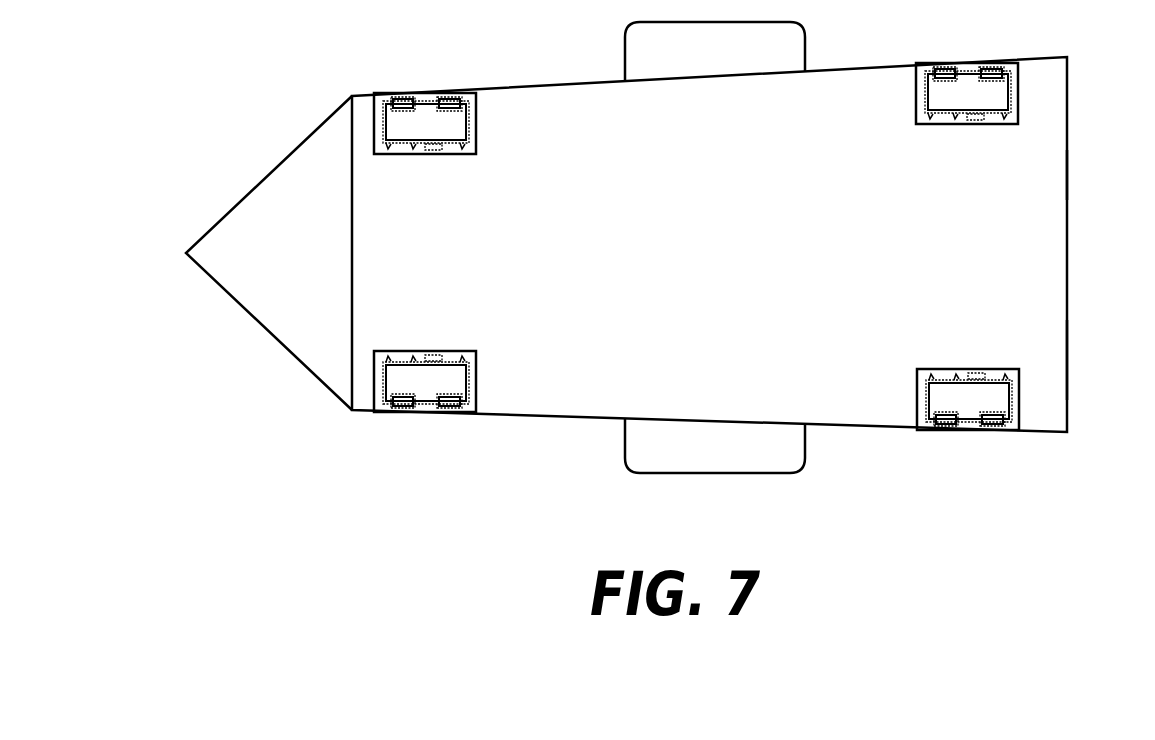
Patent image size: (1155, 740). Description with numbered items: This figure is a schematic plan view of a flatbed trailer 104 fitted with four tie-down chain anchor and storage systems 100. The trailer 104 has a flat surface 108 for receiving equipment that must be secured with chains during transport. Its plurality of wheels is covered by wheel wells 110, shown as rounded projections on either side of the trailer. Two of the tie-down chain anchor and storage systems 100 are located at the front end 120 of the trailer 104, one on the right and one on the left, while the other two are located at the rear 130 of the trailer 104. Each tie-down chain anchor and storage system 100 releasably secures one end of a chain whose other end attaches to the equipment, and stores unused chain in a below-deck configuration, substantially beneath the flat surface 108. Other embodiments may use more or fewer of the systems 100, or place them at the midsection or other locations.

The tie-down chain anchor and storage system 100 is at (427, 100).
The flatbed trailer 104 is at (1050, 250).
The flat top surface 108 is at (1050, 178).
The wheel wells 110 is at (775, 475).
The front end 120 is at (370, 207).
The rear 130 is at (1070, 336).